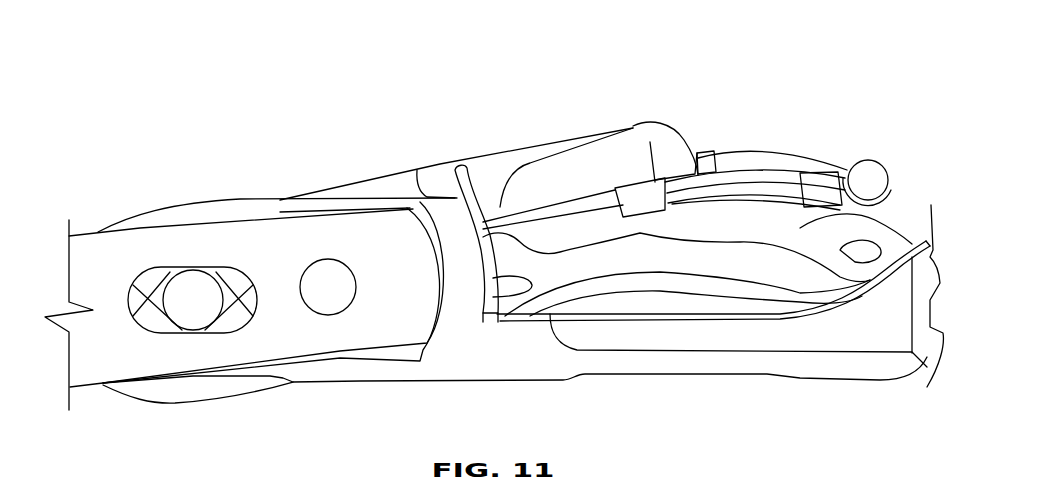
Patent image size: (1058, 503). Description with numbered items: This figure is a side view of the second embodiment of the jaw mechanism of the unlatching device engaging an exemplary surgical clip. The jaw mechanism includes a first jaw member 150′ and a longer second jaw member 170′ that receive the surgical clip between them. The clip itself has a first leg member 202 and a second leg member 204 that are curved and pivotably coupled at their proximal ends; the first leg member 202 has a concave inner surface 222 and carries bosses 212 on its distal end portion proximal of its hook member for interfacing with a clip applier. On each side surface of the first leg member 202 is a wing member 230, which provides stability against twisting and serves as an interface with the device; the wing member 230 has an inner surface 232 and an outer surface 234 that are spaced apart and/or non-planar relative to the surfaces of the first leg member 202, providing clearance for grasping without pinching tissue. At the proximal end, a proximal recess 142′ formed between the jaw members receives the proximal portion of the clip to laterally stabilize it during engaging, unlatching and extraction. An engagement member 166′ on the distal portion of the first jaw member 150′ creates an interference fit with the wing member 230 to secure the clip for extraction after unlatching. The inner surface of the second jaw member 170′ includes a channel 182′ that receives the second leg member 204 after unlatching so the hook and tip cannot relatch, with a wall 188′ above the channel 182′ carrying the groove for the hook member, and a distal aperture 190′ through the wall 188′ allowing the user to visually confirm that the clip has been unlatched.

The first jaw member 150′ is at (562, 157).
The engagement member 166′ is at (643, 200).
The outer surface 234 is at (710, 170).
The wing member 230 is at (774, 173).
The first leg member 202 is at (810, 160).
The boss 212 is at (872, 173).
The wall 188′ is at (931, 205).
The inner surface 232 is at (750, 200).
The concave inner surface 222 is at (733, 198).
The second leg member 204 is at (635, 280).
The proximal recess 142′ is at (493, 280).
The second jaw member 170′ is at (702, 358).
The channel 182′ is at (732, 307).
The distal aperture 190′ is at (933, 360).